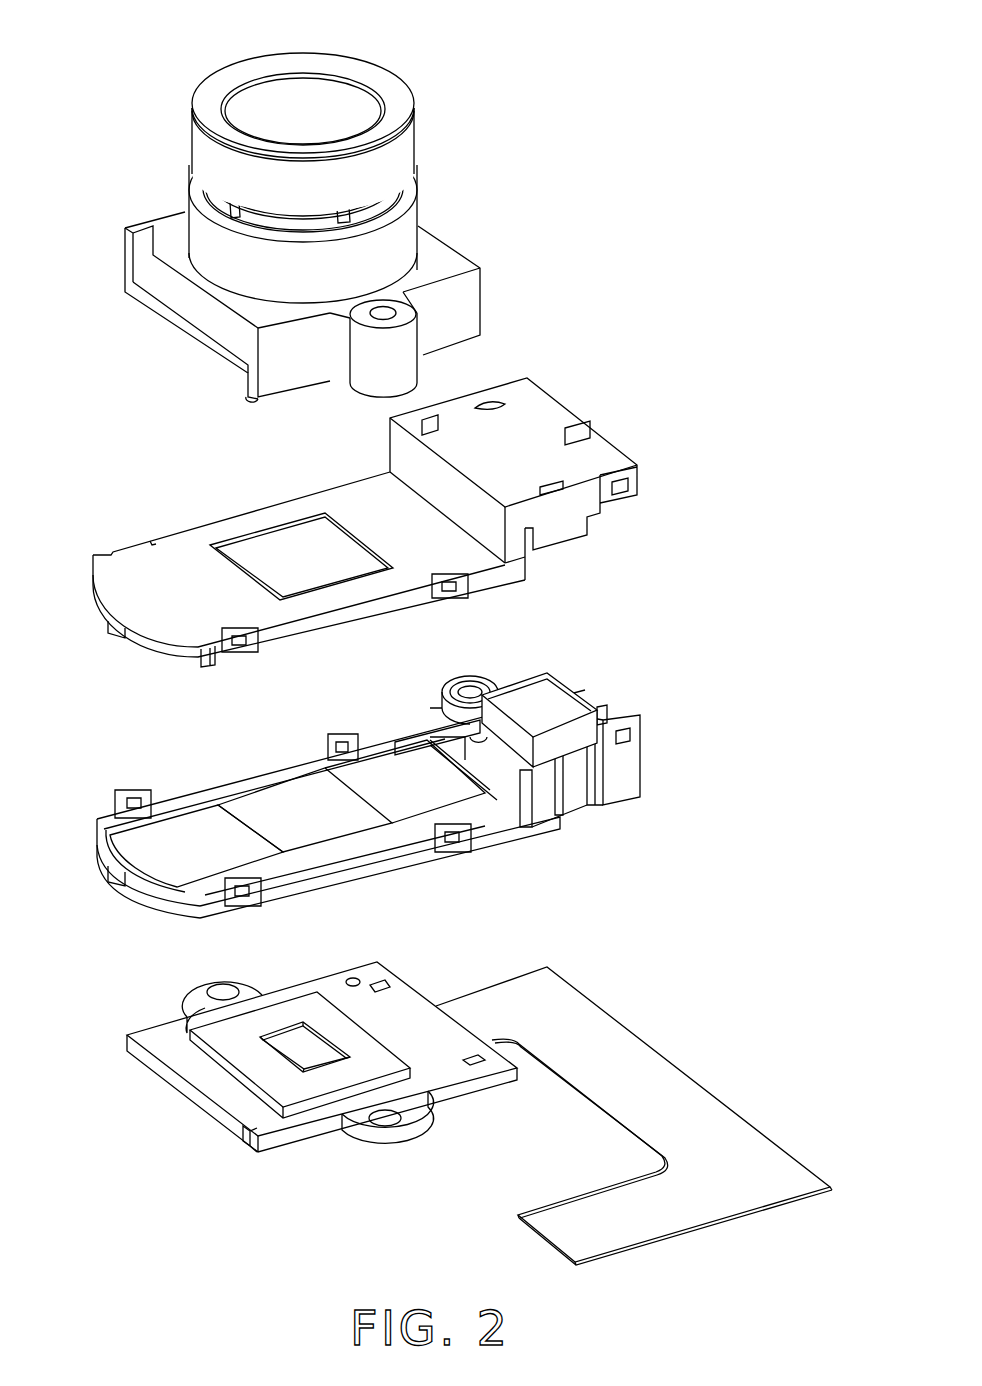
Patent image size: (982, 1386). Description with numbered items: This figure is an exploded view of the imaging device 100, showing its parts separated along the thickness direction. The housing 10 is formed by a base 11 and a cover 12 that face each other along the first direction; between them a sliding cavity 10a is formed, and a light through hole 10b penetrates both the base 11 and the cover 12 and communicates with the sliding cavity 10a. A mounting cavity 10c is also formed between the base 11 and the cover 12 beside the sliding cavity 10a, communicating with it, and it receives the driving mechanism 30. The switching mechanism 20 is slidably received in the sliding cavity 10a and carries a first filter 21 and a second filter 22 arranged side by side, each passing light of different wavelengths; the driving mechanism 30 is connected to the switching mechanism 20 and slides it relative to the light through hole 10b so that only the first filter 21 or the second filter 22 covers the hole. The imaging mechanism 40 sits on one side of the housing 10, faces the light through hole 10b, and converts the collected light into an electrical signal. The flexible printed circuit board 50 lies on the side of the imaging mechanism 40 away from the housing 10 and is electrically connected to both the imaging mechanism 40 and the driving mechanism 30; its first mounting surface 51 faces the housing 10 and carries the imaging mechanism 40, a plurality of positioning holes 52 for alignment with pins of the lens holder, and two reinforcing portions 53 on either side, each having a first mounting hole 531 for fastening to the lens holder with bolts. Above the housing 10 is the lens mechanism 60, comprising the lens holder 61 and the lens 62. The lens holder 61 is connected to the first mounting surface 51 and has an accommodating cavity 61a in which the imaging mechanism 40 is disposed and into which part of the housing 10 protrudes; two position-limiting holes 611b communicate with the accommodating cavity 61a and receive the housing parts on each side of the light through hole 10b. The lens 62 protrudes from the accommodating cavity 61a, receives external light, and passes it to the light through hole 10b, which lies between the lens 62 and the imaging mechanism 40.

The imaging device 100 is at (483, 33).
The lens mechanism 60 is at (326, 227).
The lens 62 is at (354, 133).
The lens holder 61 is at (308, 270).
The position-limiting hole 611b is at (184, 303).
The accommodating cavity 61a is at (179, 356).
The housing 10 is at (427, 602).
The cover 12 is at (391, 522).
The light through hole 10b is at (273, 547).
The sliding cavity 10a is at (246, 778).
The mounting cavity 10c is at (426, 732).
The base 11 is at (620, 766).
The switching mechanism 20 is at (112, 853).
The first filter 21 is at (292, 797).
The second filter 22 is at (169, 837).
The driving mechanism 30 is at (526, 696).
The imaging mechanism 40 is at (243, 1053).
The flexible printed circuit board 50 is at (677, 1082).
The first mounting surface 51 is at (307, 1061).
The positioning hole 52 is at (351, 978).
The reinforcing portion 53 is at (200, 1002).
The first mounting hole 531 is at (219, 990).